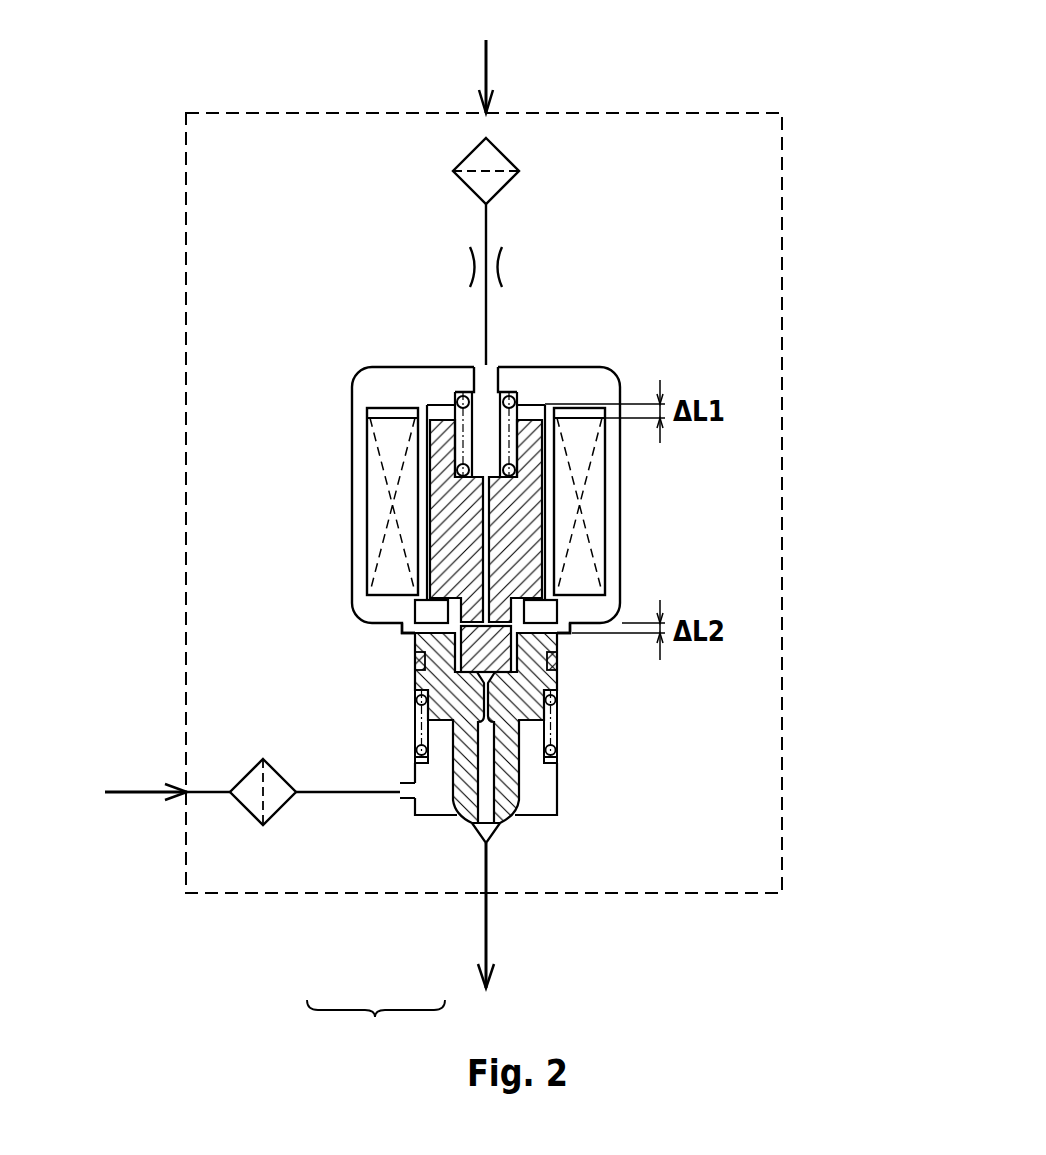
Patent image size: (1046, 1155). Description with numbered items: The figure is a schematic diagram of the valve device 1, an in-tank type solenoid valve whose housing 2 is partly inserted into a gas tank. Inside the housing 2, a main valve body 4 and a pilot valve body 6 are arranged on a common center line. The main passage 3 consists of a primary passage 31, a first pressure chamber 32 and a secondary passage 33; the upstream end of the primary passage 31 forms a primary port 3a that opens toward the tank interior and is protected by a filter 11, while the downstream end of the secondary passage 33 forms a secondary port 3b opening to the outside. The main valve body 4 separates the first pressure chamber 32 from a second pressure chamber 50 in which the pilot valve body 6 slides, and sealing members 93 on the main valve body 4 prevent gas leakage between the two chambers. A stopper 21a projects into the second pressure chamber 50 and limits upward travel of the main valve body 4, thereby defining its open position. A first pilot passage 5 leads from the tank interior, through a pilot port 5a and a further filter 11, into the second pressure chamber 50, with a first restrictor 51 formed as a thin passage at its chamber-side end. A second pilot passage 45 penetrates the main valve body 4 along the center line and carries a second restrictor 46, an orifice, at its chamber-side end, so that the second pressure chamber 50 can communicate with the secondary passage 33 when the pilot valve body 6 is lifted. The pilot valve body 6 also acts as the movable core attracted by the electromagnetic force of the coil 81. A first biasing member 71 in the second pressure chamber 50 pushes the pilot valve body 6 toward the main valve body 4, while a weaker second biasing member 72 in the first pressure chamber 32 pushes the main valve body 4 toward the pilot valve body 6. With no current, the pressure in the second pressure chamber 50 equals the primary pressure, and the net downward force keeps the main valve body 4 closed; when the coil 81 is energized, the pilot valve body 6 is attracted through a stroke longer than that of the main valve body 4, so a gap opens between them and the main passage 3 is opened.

The valve device 1 is at (717, 113).
The housing 2 is at (562, 372).
The main passage 3 is at (376, 1025).
The primary port 3a is at (183, 800).
The secondary port 3b is at (487, 893).
The main valve body 4 is at (512, 768).
The first pilot passage 5 is at (485, 220).
The pilot port 5a is at (480, 112).
The pilot valve body 6 is at (457, 520).
The filter 11 is at (519, 170).
The stopper 21a is at (443, 610).
The primary passage 31 is at (318, 795).
The first pressure chamber 32 is at (430, 792).
The secondary passage 33 is at (487, 870).
The second pilot passage 45 is at (490, 790).
The second restrictor 46 is at (460, 695).
The second pressure chamber 50 is at (443, 410).
The first restrictor 51 is at (469, 267).
The first biasing member 71 is at (453, 395).
The second biasing member 72 is at (416, 750).
The coil 81 is at (590, 495).
The sealing members 93 is at (557, 662).